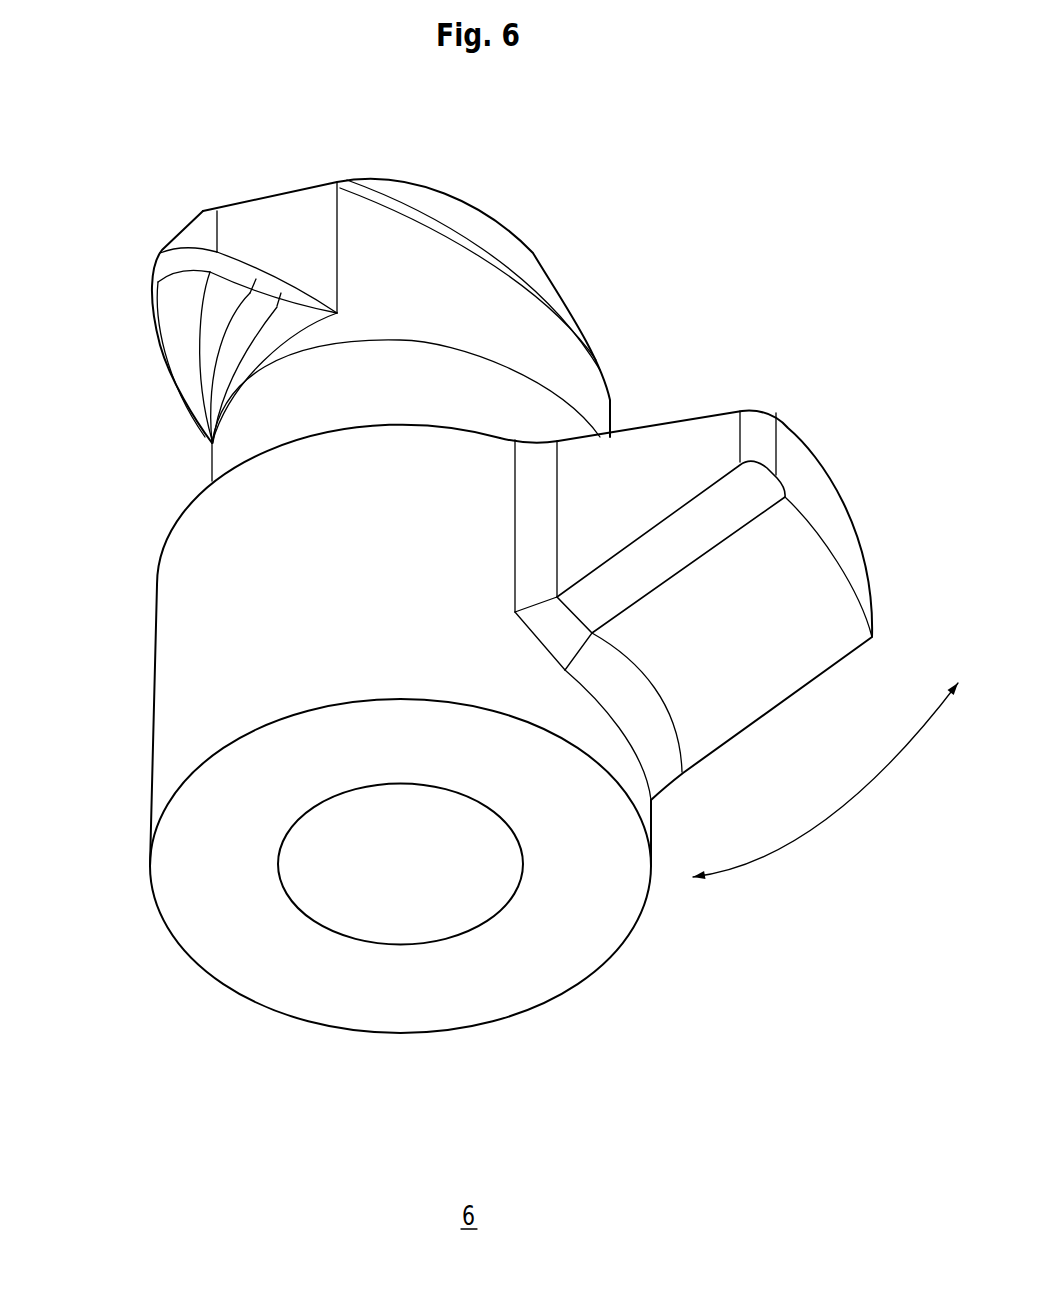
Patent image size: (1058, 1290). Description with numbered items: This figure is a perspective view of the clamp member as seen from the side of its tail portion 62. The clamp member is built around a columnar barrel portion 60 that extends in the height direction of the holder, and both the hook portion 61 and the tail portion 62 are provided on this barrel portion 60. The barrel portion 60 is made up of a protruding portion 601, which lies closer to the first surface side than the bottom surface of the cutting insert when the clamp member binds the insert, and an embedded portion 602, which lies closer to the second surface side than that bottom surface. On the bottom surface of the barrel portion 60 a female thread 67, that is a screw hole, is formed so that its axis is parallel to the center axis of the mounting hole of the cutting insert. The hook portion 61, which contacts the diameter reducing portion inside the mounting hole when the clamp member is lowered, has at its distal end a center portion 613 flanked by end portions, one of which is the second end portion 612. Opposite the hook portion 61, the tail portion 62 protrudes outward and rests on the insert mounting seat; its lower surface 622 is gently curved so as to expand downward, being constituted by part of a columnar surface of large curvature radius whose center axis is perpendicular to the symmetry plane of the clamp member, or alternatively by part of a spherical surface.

The barrel portion 60 is at (180, 615).
The protruding portion 601 is at (207, 440).
The embedded portion 602 is at (172, 708).
The hook portion 61 is at (180, 223).
The second end portion 612 is at (165, 257).
The center portion 613 is at (157, 345).
The tail portion 62 is at (815, 445).
The lower surface 622 is at (755, 660).
The female thread 67 is at (312, 878).